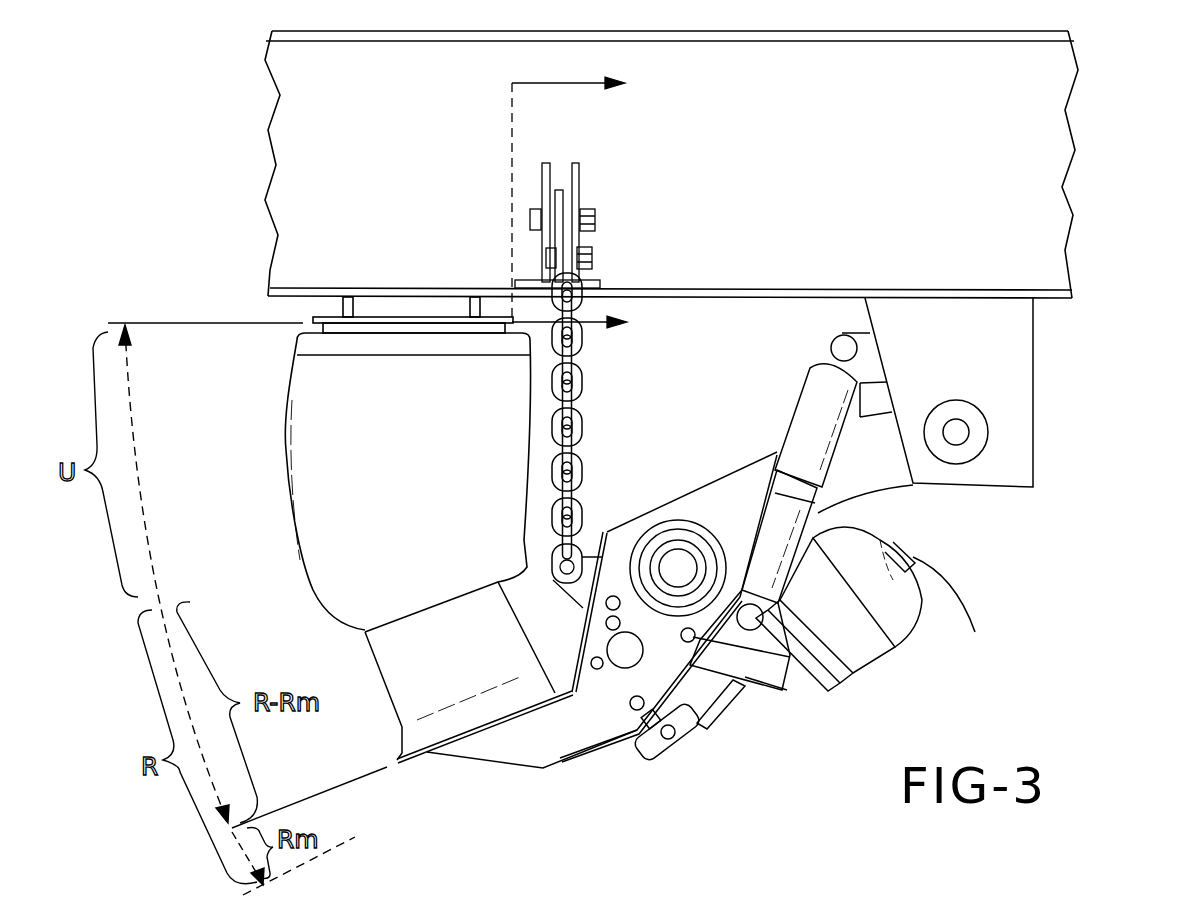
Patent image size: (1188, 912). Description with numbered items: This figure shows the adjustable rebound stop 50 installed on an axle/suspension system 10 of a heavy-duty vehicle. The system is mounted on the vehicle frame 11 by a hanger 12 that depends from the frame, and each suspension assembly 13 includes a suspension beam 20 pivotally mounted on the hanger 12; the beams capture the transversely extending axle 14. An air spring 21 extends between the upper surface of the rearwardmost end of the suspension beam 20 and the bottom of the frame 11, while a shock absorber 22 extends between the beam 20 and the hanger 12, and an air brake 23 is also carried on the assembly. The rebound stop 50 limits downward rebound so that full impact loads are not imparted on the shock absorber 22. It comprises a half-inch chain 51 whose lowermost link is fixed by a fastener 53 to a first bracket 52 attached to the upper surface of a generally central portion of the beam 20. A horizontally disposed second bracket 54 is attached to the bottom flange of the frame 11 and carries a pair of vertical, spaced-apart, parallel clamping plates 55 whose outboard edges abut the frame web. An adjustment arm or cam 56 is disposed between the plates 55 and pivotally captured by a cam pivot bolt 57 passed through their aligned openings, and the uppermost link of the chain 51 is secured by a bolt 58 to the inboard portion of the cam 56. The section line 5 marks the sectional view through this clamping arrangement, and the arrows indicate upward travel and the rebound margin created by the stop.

The section line 5- 5 is at (581, 204).
The axle/suspension system 10 is at (717, 442).
The vehicle frame 11 is at (1062, 187).
The hanger 12 is at (1033, 380).
The suspension assembly 13 is at (752, 466).
The axle 14 is at (676, 566).
The suspension beam 20 is at (678, 497).
The air spring 21 is at (396, 511).
The shock absorber 22 is at (810, 378).
The air brake 23 is at (920, 607).
The adjustable rebound stop 50 is at (553, 362).
The chain 51 is at (580, 463).
The first bracket 52 is at (580, 608).
The fastener 53 is at (563, 567).
The second bracket 54 is at (600, 282).
The clamping plates 55 is at (574, 165).
The adjustment arm or cam 56 is at (560, 200).
The cam pivot bolt 57 is at (598, 222).
The bolt 58 is at (596, 258).